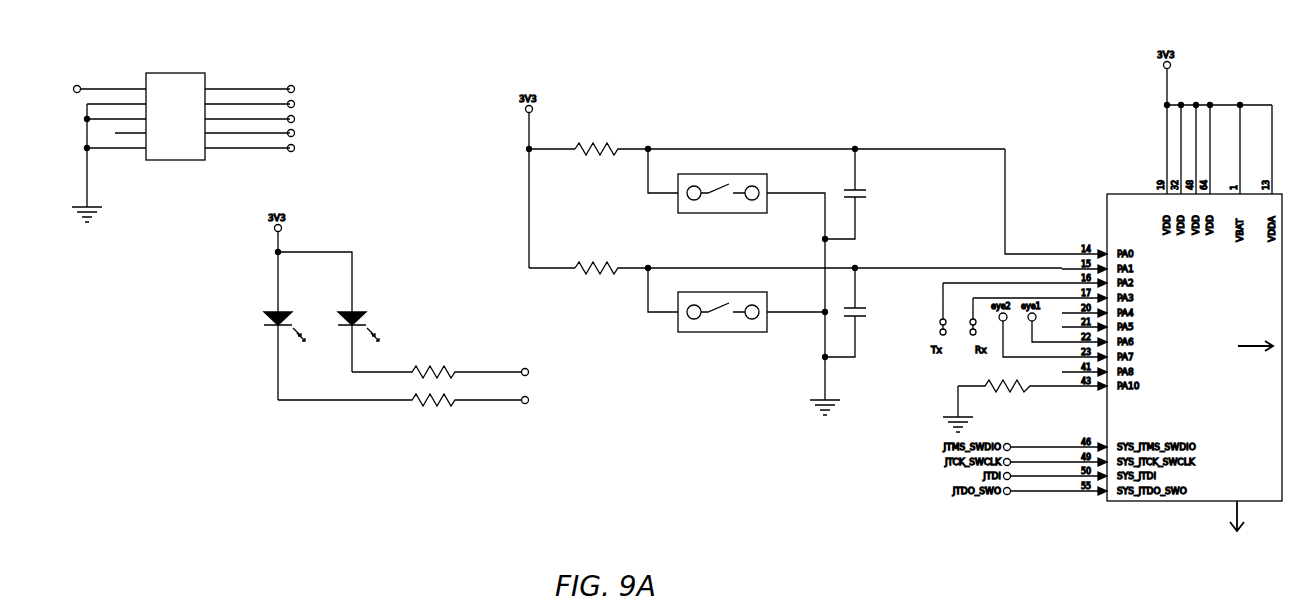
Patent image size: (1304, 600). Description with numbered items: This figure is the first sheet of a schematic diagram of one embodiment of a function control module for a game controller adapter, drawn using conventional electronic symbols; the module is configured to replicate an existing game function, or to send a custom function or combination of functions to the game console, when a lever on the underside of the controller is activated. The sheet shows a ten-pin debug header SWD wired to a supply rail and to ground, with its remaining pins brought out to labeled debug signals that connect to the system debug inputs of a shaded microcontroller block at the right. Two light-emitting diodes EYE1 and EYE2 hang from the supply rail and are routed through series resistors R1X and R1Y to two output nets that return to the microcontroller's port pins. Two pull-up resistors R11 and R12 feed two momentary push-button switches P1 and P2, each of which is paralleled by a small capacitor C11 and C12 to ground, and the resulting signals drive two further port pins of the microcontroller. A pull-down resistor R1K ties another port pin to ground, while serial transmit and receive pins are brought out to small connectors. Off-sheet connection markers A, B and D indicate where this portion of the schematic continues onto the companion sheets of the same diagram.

The SWD debug header MHDR2X5 SWD is at (201, 141).
The LED eye 1 EYE1 is at (270, 350).
The LED eye 2 EYE2 is at (343, 336).
The resistor 1K R1X is at (452, 366).
The resistor 1K R1Y is at (415, 394).
The resistor 10K R11 is at (790, 149).
The resistor 10K R12 is at (818, 268).
The push button switch SOC-154HST P1 is at (736, 194).
The push button switch SOC-154HST P2 is at (736, 307).
The capacitor 18pF C11 is at (857, 194).
The capacitor 18pF C12 is at (857, 312).
The resistor 10K R1K is at (1025, 400).
The connection point A is at (1240, 348).
The connection point B is at (1291, 349).
The connection point D is at (1229, 534).